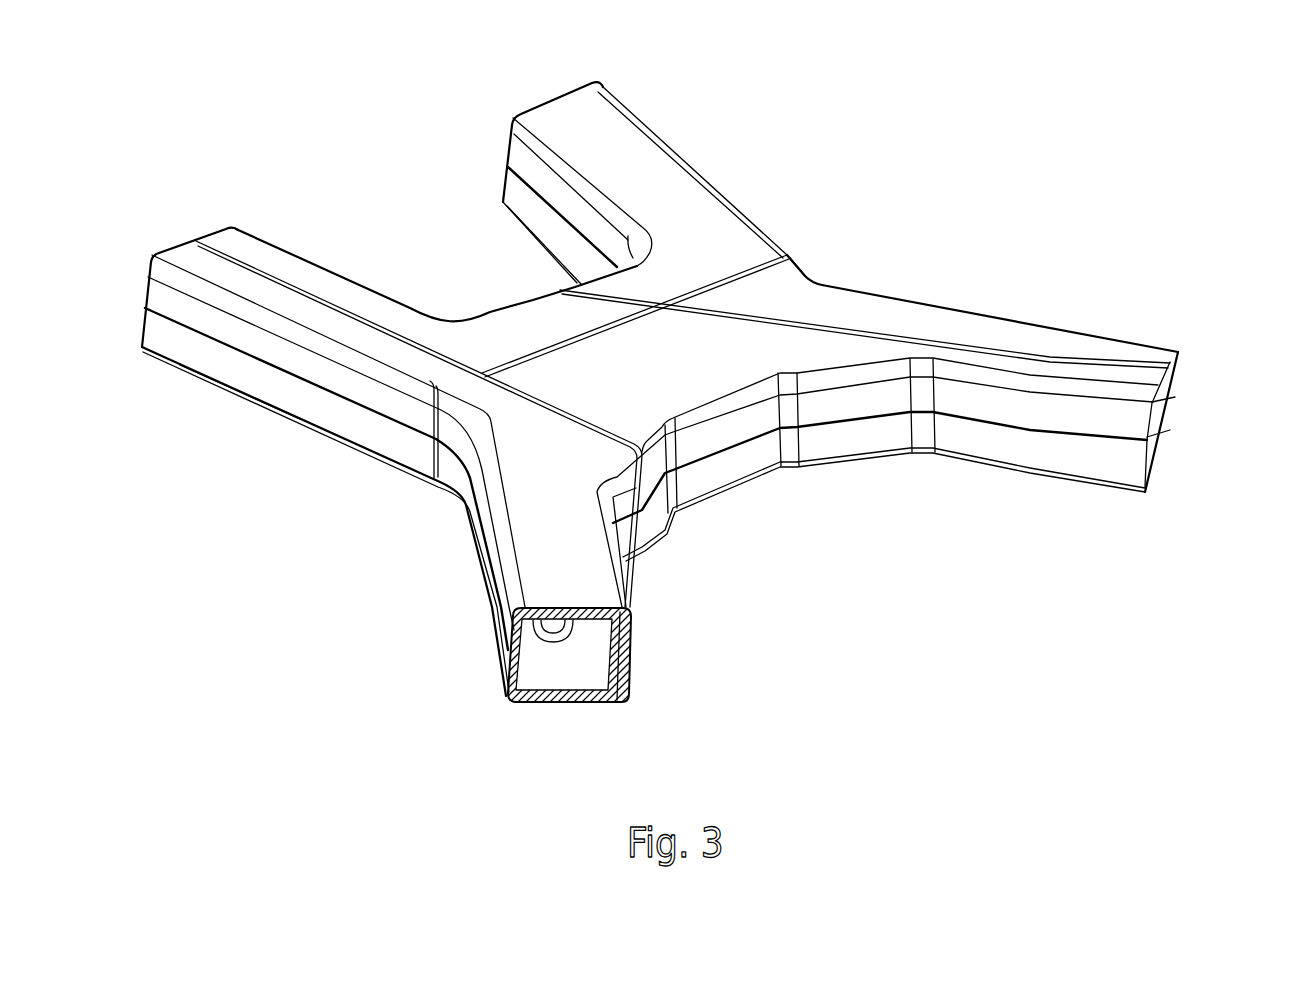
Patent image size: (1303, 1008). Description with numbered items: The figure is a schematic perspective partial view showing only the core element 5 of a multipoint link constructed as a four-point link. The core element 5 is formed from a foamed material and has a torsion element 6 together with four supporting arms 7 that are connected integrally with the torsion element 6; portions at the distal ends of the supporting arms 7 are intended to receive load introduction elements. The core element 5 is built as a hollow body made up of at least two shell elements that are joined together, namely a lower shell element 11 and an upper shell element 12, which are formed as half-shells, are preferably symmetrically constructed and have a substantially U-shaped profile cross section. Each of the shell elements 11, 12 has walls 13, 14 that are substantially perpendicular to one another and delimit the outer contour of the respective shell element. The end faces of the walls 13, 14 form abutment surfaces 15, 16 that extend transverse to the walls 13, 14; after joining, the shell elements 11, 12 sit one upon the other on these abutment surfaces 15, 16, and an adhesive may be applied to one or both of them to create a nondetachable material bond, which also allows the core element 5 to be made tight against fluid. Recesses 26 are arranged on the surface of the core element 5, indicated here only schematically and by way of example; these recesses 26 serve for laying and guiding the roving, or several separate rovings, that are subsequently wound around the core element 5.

The core element 5 is at (517, 340).
The torsion element 6 is at (799, 258).
The supporting arms 7 is at (622, 145).
The lower shell element 11 is at (271, 411).
The upper shell element 12 is at (197, 236).
The wall 13 is at (156, 336).
The wall 14 is at (155, 288).
The abutment surface 15 is at (503, 672).
The abutment surface 16 is at (633, 636).
The recesses 26 is at (748, 266).